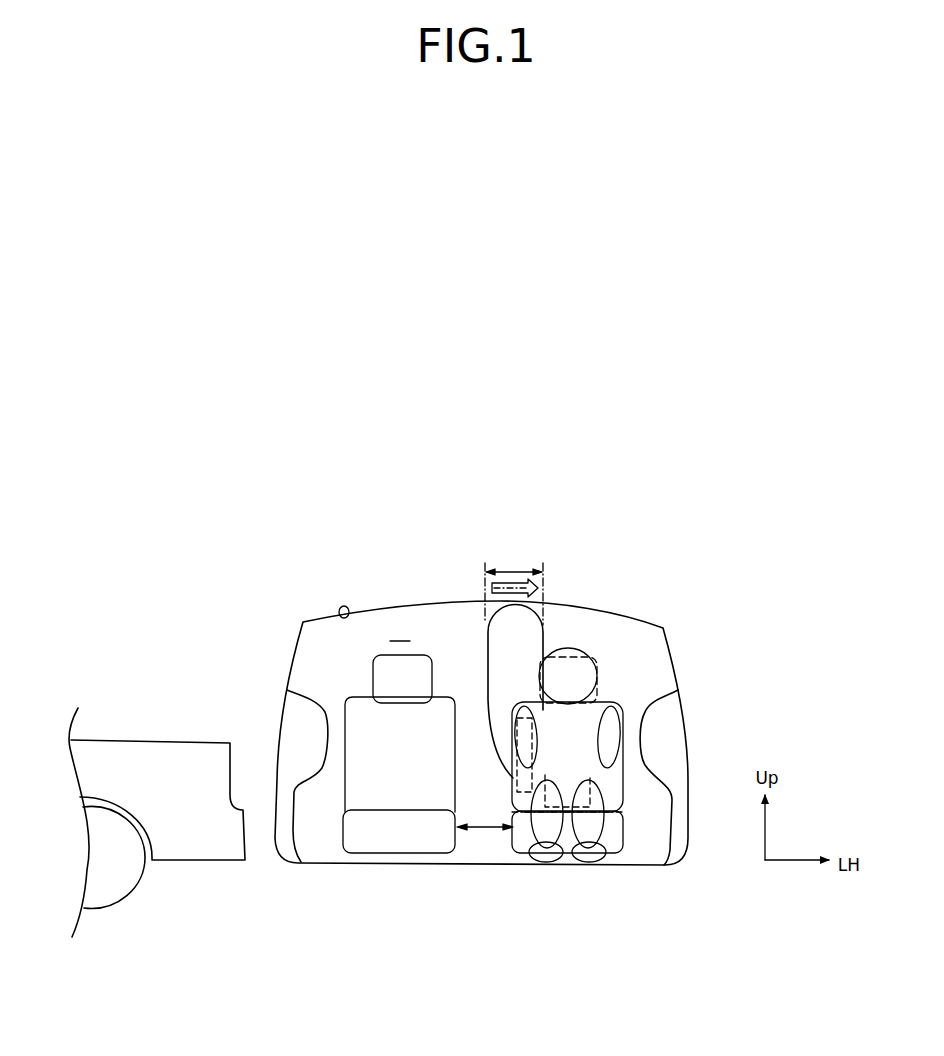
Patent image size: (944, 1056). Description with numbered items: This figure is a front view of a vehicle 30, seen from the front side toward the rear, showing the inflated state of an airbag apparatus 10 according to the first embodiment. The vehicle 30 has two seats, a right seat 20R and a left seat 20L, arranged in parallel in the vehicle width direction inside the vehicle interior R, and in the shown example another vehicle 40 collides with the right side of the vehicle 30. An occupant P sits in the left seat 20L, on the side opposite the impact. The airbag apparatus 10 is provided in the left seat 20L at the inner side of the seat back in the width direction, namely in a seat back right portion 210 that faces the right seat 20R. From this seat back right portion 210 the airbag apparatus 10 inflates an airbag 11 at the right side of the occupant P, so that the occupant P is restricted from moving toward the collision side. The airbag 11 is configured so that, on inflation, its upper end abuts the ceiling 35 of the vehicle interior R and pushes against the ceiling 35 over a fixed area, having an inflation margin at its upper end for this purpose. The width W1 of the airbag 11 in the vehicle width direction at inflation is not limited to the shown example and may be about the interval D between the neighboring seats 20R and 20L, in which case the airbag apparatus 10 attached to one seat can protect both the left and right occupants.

The airbag apparatus 10 is at (503, 777).
The airbag 11 is at (497, 673).
The right seat 20R is at (340, 836).
The left seat 20L is at (630, 838).
The vehicle 30 is at (623, 610).
The ceiling 35 is at (345, 606).
The another vehicle 40 is at (150, 735).
The seat back right portion 210 is at (512, 785).
The occupant P is at (587, 721).
The vehicle interior R is at (400, 629).
The interval between neighboring seats D is at (485, 796).
The width of the airbag W1 is at (514, 585).